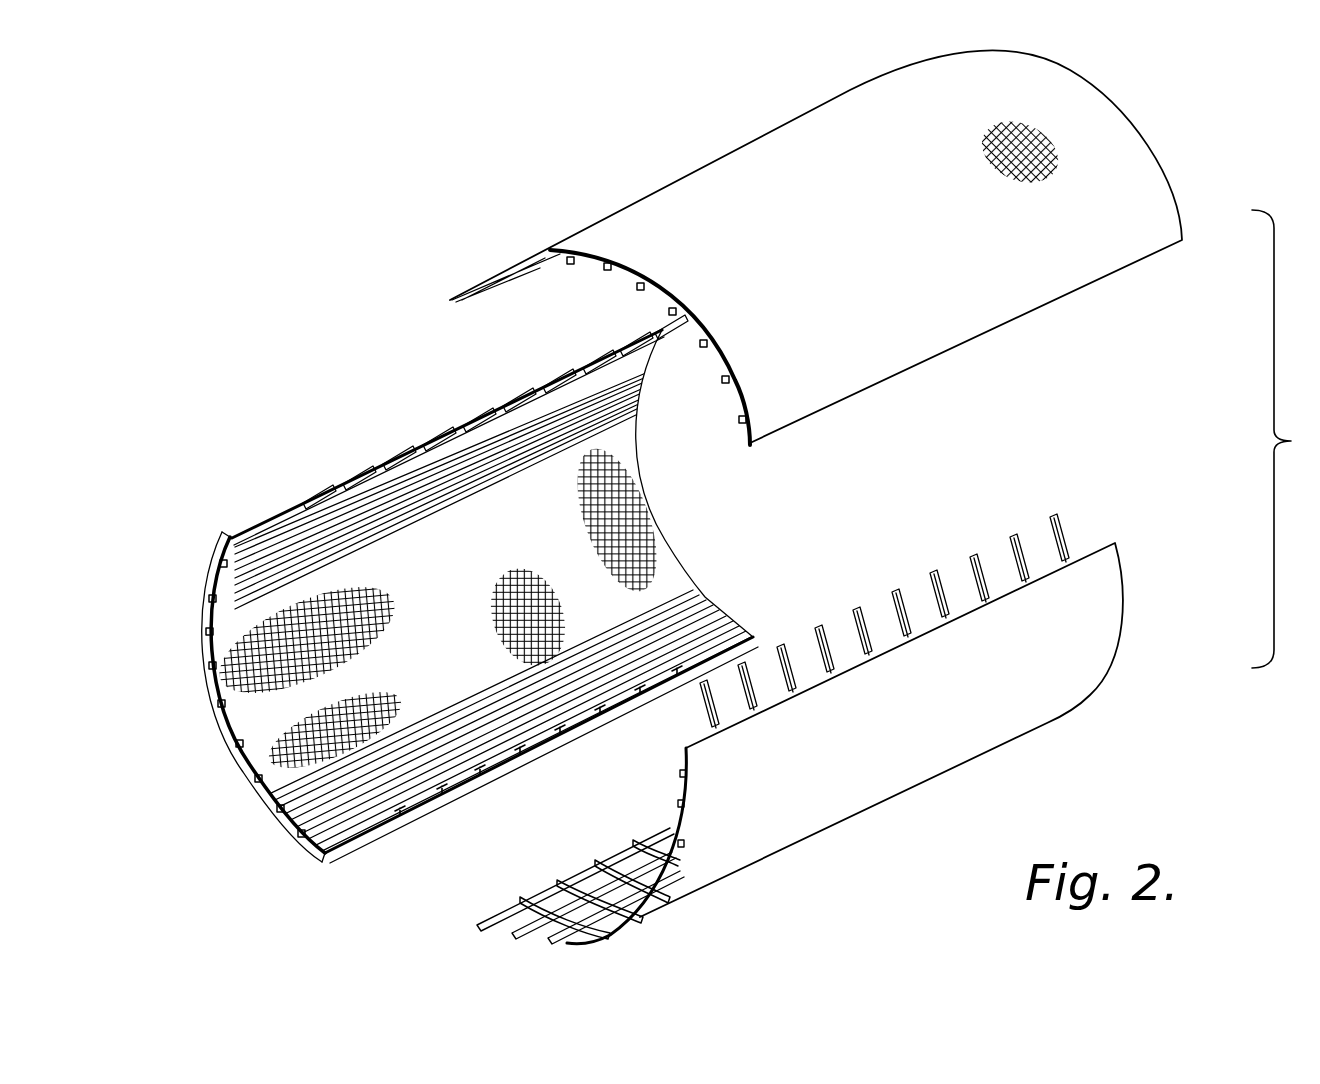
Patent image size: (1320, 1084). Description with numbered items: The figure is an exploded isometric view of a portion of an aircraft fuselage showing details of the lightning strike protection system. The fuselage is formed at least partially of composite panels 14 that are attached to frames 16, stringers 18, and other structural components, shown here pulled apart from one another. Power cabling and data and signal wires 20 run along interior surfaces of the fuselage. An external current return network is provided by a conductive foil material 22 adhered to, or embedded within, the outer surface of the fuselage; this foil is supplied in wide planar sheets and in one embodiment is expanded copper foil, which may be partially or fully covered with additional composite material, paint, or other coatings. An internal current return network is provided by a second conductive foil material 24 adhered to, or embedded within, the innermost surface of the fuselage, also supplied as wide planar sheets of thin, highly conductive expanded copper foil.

The composite panels 14 is at (772, 172).
The frames 16 is at (1053, 518).
The stringers 18 is at (492, 938).
The power cabling and data and signal wires 20 is at (233, 580).
The conductive foil material 22 is at (1030, 147).
The conductive foil material 24 is at (240, 711).